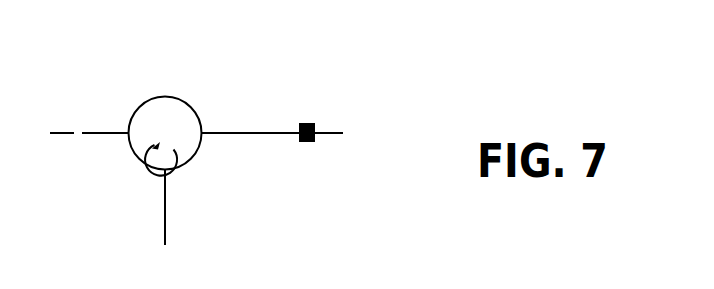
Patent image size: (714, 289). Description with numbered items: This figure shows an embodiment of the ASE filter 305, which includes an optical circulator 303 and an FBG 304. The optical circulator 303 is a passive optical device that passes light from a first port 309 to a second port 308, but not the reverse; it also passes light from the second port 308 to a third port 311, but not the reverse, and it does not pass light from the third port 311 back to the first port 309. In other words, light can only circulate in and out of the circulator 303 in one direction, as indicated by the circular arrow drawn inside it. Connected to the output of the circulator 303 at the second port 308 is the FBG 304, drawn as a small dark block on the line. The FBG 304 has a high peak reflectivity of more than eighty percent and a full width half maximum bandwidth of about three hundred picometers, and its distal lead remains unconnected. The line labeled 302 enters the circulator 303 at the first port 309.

The input port / optical fiber 302 is at (57, 133).
The optical circulator 303 is at (185, 101).
The FBG 304 is at (307, 147).
The ASE filter 305 is at (343, 167).
The second port 308 is at (215, 133).
The first port 309 is at (122, 135).
The third port 311 is at (165, 200).